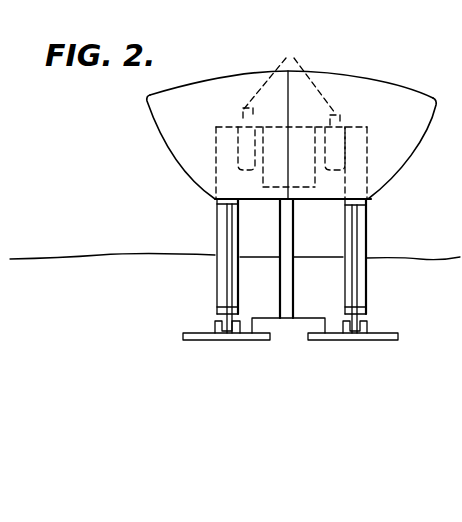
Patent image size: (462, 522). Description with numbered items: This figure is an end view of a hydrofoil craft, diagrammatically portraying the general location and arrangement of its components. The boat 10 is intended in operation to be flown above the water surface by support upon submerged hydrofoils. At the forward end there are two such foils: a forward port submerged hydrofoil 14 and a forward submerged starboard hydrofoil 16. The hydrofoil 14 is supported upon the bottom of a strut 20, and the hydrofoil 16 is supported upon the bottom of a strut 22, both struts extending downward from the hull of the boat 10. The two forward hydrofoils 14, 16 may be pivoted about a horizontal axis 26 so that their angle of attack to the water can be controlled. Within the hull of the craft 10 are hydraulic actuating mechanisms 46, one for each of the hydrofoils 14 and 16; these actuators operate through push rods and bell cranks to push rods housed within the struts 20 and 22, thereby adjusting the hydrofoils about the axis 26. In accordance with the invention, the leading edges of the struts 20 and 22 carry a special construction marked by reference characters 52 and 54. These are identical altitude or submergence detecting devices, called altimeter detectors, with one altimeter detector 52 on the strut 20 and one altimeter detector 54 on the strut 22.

The boat 10 is at (358, 80).
The forward port submerged hydrofoil 14 is at (385, 335).
The forward submerged starboard hydrofoil 16 is at (195, 332).
The strut 20 is at (368, 199).
The strut 22 is at (215, 199).
The horizontal axis 26 is at (216, 327).
The hydraulic actuating mechanisms 46 is at (291, 118).
The altimeter detector 52 is at (358, 237).
The altimeter detector 54 is at (220, 245).